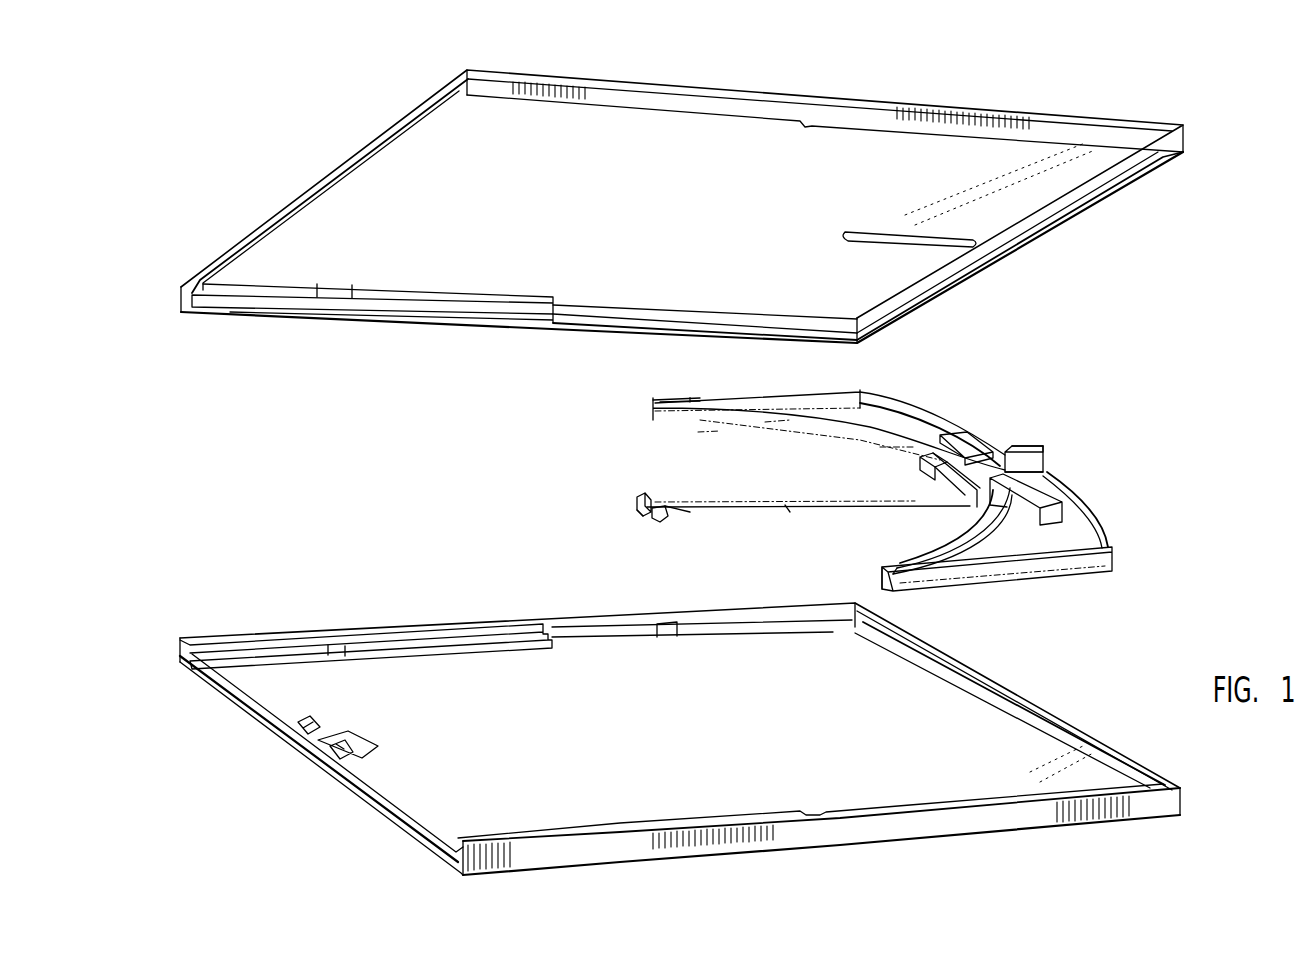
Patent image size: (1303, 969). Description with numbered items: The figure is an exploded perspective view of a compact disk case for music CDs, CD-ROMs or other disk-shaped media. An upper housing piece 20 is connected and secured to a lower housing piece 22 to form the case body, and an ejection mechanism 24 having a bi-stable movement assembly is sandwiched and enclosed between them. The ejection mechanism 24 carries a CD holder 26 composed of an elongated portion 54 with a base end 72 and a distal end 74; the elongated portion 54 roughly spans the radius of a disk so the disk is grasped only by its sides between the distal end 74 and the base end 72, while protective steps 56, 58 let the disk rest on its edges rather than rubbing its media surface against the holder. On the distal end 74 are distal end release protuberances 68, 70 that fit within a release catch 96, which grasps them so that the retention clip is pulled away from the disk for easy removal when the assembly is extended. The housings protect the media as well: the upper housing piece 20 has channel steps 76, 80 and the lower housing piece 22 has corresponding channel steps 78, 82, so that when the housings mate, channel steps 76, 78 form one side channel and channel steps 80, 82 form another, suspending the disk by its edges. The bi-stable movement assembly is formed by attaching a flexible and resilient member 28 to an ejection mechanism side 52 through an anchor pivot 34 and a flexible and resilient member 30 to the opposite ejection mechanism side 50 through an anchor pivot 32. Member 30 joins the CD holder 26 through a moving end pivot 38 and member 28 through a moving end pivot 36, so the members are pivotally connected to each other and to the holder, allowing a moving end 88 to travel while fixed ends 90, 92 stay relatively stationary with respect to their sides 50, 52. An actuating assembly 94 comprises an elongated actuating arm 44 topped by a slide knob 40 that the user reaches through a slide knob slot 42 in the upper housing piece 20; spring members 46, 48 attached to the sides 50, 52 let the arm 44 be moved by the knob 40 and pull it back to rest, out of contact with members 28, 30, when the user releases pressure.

The upper housing piece 20 is at (682, 221).
The lower housing piece 22 is at (680, 735).
The ejection mechanism 24 is at (846, 488).
The CD holder 26 is at (768, 490).
The flexible and resilient member 28 is at (765, 422).
The flexible and resilient member 30 is at (957, 547).
The anchor pivot 32 is at (876, 567).
The anchor pivot 34 is at (670, 402).
The moving end pivot 36 is at (1045, 440).
The moving end pivot 38 is at (1045, 474).
The slide knob 40 is at (1040, 458).
The slide knob slot 42 is at (960, 246).
The elongated actuating arm 44 is at (1048, 502).
The spring member 46 is at (1108, 543).
The spring member 48 is at (937, 407).
The ejection mechanism side 50 is at (1010, 577).
The ejection mechanism side 52 is at (795, 392).
The elongated portion 54 is at (785, 505).
The protective step 56 is at (945, 490).
The protective step 58 is at (690, 515).
The distal end release protuberance 68 is at (665, 522).
The distal end release protuberance 70 is at (640, 500).
The base end 72 is at (897, 463).
The distal end 74 is at (612, 511).
The channel step 76 is at (460, 310).
The channel step 78 is at (340, 632).
The channel step 80 is at (582, 125).
The channel step 82 is at (543, 828).
The moving end 88 is at (973, 447).
The fixed end 90 is at (912, 553).
The fixed end 92 is at (698, 432).
The actuating assembly 94 is at (1048, 443).
The release catch 96 is at (290, 765).